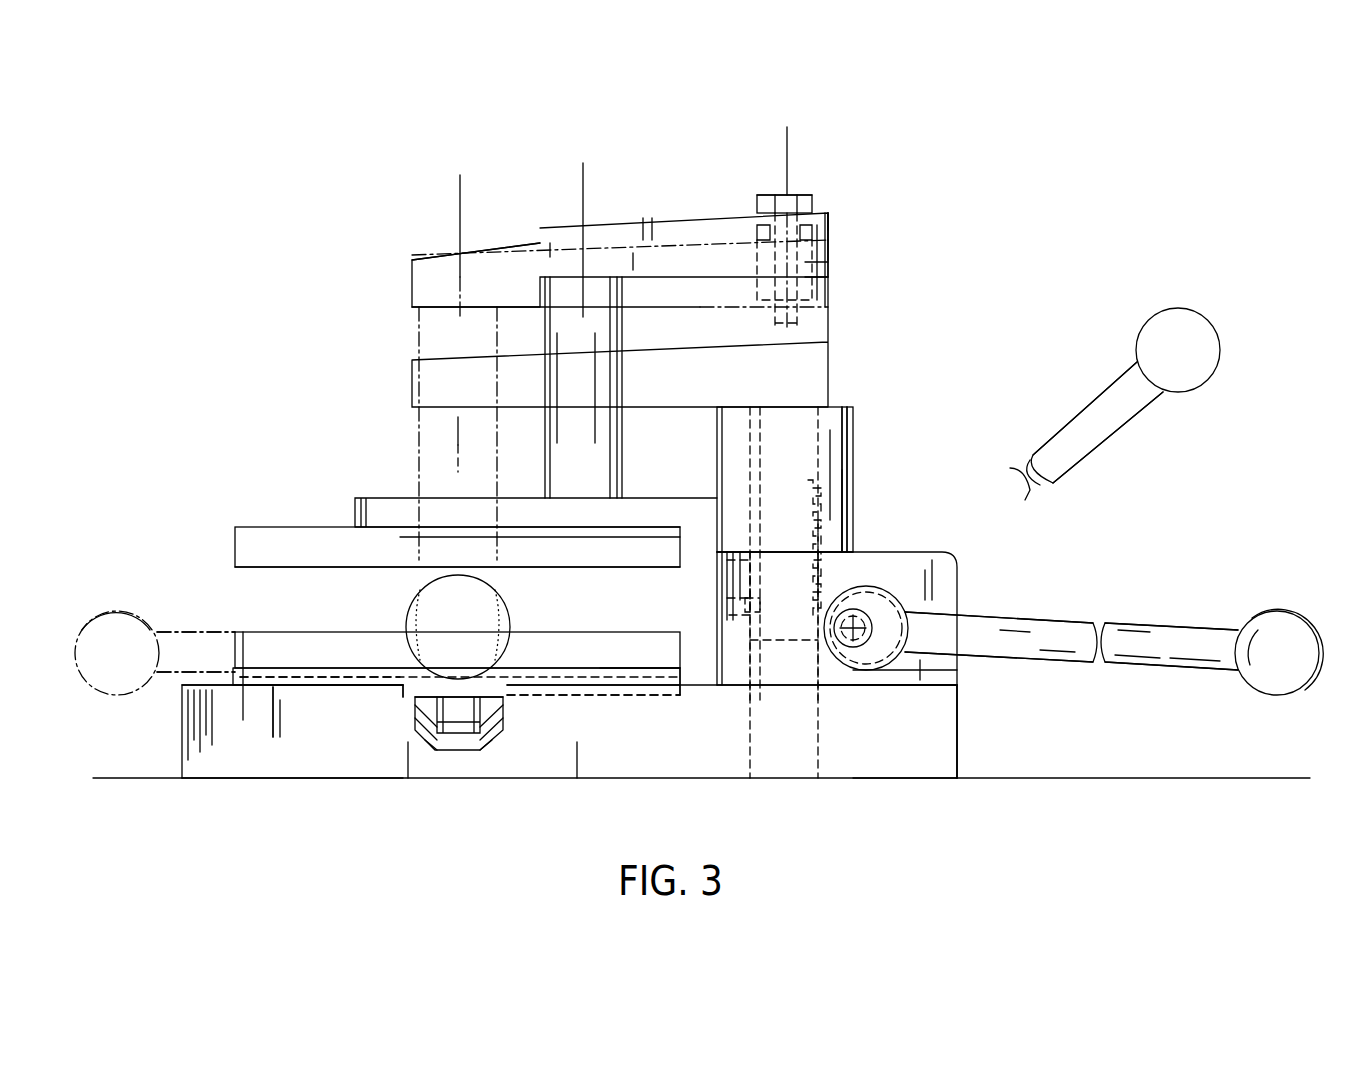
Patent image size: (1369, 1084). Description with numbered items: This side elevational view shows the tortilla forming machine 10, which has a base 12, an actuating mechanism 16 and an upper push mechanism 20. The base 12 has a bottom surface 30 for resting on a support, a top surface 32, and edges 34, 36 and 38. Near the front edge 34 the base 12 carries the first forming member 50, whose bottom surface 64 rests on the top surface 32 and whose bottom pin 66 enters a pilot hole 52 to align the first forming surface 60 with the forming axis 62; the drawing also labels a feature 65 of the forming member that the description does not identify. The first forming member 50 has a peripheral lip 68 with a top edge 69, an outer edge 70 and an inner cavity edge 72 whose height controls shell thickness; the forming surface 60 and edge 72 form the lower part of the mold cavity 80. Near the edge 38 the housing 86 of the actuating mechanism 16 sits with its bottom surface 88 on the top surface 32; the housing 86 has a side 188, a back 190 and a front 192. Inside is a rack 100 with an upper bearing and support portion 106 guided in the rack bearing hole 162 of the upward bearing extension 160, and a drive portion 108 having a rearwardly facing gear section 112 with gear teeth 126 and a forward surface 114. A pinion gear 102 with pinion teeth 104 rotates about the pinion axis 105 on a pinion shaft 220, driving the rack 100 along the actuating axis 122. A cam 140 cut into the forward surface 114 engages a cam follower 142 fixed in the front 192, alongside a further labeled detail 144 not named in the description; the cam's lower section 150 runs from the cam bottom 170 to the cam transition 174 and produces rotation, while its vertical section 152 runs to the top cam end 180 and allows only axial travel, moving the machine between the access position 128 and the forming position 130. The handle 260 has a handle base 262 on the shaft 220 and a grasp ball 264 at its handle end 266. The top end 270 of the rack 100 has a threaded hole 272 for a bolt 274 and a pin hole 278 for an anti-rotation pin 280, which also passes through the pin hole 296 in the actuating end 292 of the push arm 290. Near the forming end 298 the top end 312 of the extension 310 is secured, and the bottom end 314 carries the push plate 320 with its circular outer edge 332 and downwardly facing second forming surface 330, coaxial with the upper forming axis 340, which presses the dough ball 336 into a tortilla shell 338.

The tortilla forming machine 10 is at (1005, 201).
The base 12 is at (218, 760).
The actuating mechanism 16 is at (888, 538).
The upper push mechanism 20 is at (887, 181).
The bottom surface 30 is at (408, 780).
The top surface 32 is at (878, 690).
The edge 34 is at (182, 766).
The edge 36 is at (300, 766).
The edge 38 is at (960, 755).
The first forming member 50 is at (657, 688).
The pilot hole 52 is at (458, 747).
The first forming surface 60 is at (320, 668).
The forming axis 62 is at (458, 437).
The bottom surface 64 is at (384, 730).
The nut top 65 is at (433, 696).
The bottom pin 66 is at (478, 752).
The peripheral lip 68 is at (248, 718).
The top edge 69 is at (247, 647).
The outer edge 70 is at (233, 671).
The inner cavity edge 72 is at (258, 676).
The mold cavity 80 is at (332, 672).
The housing 86 is at (917, 556).
The bottom surface 88 is at (890, 690).
The rack 100 is at (820, 477).
The pinion gear 102 is at (905, 576).
The pinion teeth 104 is at (892, 668).
The pinion axis 105 is at (850, 633).
The upper bearing and support portion 106 is at (810, 408).
The drive portion 108 is at (849, 500).
The gear section 112 is at (822, 531).
The forward surface 114 is at (747, 438).
The actuating axis 122 is at (789, 155).
The gear teeth 126 is at (812, 571).
The access position 128 is at (435, 257).
The forming position 130 is at (410, 358).
The cam 140 is at (748, 479).
The cam follower 142 is at (760, 603).
The spring seat 144 is at (724, 600).
The lower section 150 is at (758, 590).
The vertical section 152 is at (843, 490).
The upward bearing extension 160 is at (848, 425).
The rack bearing hole 162 is at (832, 410).
The cam bottom 170 is at (784, 656).
The cam transition 174 is at (760, 600).
The top cam end 180 is at (836, 432).
The side 188 is at (905, 606).
The back 190 is at (905, 586).
The front 192 is at (722, 578).
The pinion shaft 220 is at (850, 648).
The handle 260 is at (1137, 628).
The handle base 262 is at (1071, 641).
The grasp ball 264 is at (1262, 616).
The handle end 266 is at (1207, 318).
The top end 270 is at (832, 353).
The threaded hole 272 is at (773, 293).
The bolt 274 is at (813, 199).
The pin hole 278 is at (829, 276).
The anti-rotation pin 280 is at (829, 256).
The push arm 290 is at (619, 228).
The actuating end 292 is at (829, 236).
The pin hole 296 is at (829, 263).
The forming end 298 is at (412, 268).
The extension 310 is at (470, 327).
The top end 312 is at (457, 303).
The bottom end 314 is at (432, 520).
The push plate 320 is at (468, 496).
The second forming surface 330 is at (393, 541).
The outer edge 332 is at (233, 526).
The dough ball 336 is at (496, 645).
The tortilla shell 338 is at (597, 672).
The upper forming axis 340 is at (460, 202).